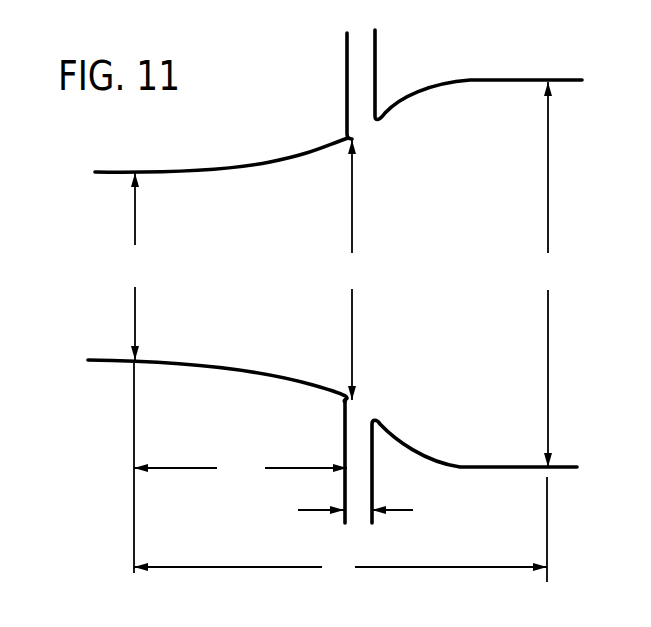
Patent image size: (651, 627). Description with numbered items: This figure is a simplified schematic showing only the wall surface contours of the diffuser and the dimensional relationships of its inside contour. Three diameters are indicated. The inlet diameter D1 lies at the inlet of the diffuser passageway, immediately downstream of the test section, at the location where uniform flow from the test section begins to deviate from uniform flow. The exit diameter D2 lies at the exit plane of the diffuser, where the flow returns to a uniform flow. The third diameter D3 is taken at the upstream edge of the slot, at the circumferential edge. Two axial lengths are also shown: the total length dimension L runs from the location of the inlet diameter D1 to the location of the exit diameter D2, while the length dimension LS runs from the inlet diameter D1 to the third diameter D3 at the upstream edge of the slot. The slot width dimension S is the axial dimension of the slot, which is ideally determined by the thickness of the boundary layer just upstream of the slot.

The inlet diameter D1 is at (138, 266).
The exit diameter D2 is at (549, 274).
The third diameter D3 is at (354, 270).
The length dimension LS is at (240, 472).
The slot width dimension S is at (355, 512).
The total length dimension L is at (340, 570).